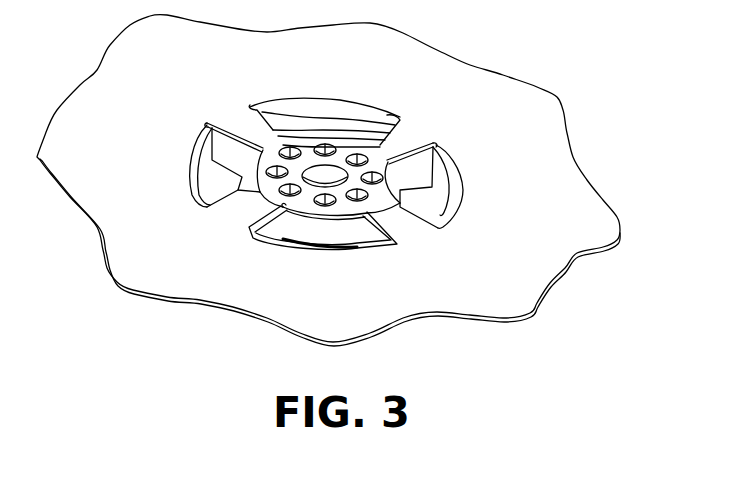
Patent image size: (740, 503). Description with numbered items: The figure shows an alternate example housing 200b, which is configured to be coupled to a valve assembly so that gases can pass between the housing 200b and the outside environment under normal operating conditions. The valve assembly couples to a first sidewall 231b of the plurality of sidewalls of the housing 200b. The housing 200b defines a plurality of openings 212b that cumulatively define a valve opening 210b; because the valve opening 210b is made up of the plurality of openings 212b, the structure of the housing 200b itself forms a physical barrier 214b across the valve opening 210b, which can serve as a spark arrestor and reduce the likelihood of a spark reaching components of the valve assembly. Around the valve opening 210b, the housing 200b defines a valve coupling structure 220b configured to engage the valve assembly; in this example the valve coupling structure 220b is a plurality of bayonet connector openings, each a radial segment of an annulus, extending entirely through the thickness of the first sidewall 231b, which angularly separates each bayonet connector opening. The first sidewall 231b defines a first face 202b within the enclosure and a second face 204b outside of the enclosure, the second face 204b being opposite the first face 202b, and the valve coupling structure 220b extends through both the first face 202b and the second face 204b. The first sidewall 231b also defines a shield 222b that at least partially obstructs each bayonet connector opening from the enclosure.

The housing 200b is at (533, 107).
The first face 202b is at (537, 305).
The second face 204b is at (565, 197).
The first sidewall 231b is at (423, 65).
The physical barrier 214b is at (308, 152).
The plurality of openings 212b is at (378, 175).
The shield 222b is at (427, 203).
The valve coupling structure 220b is at (362, 263).
The valve opening 210b is at (392, 213).